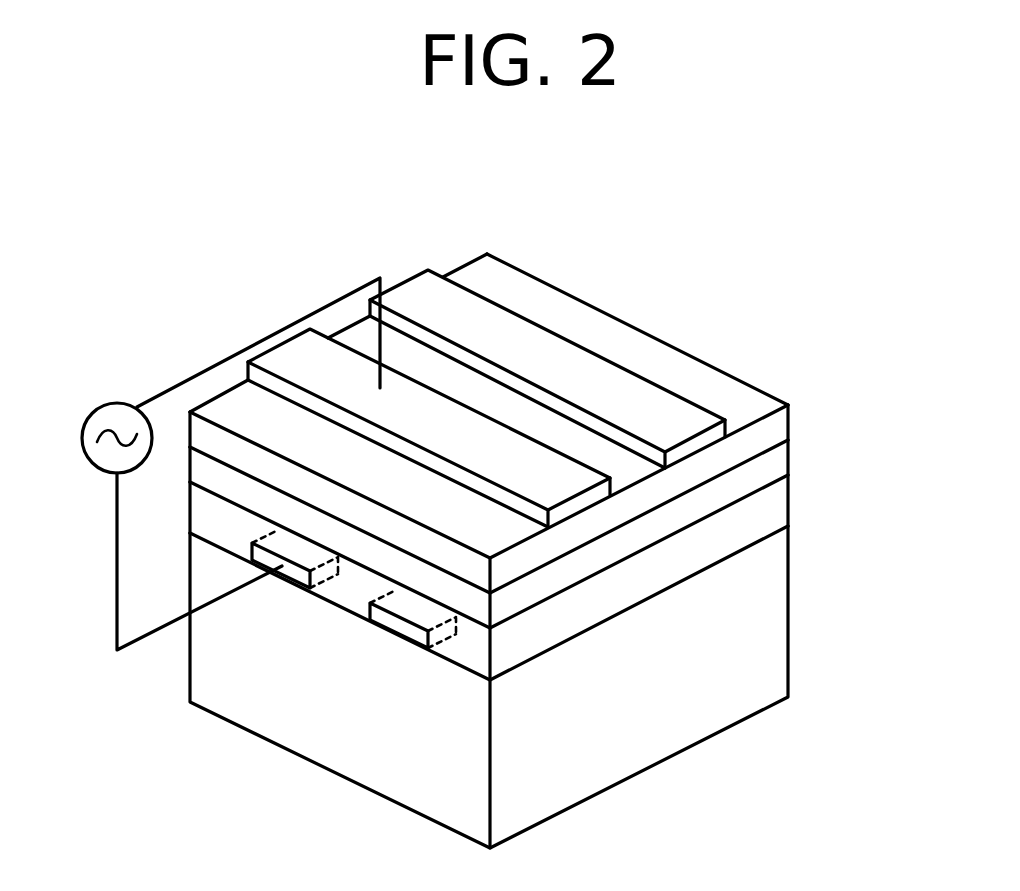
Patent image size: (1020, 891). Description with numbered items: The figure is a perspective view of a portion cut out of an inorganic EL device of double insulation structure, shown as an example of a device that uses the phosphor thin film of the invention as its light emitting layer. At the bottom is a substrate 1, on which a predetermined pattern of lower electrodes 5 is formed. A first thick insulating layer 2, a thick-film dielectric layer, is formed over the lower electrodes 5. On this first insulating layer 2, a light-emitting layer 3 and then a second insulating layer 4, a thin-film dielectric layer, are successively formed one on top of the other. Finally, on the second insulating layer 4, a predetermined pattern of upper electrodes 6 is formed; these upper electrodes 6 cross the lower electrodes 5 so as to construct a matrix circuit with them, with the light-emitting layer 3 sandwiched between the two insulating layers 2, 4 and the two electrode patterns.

The substrate 1 is at (790, 613).
The first thick insulating layer 2 is at (790, 502).
The light-emitting layer 3 is at (790, 457).
The second insulating layer 4 is at (790, 422).
The lower electrodes 5 is at (382, 624).
The upper electrodes 6 is at (642, 398).